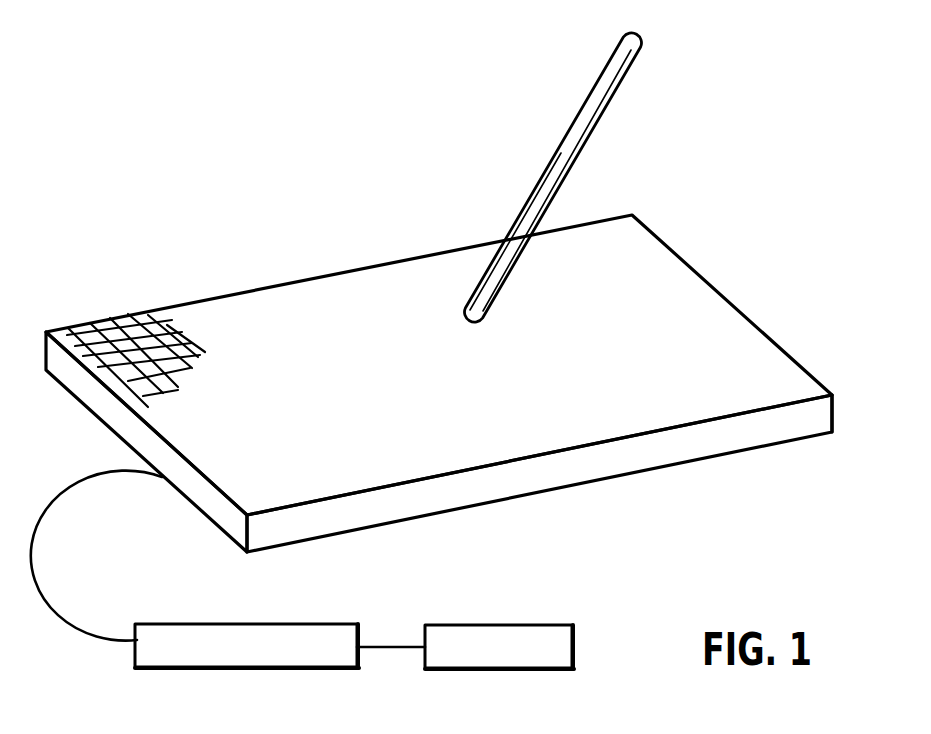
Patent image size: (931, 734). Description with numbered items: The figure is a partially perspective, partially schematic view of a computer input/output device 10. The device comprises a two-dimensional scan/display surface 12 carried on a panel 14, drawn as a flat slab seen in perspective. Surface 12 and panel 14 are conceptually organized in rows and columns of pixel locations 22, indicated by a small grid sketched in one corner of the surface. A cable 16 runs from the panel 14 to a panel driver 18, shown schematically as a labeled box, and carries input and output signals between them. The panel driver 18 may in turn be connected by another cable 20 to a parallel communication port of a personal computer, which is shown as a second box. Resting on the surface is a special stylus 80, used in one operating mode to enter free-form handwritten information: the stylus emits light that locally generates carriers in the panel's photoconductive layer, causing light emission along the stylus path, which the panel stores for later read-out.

The computer input/output device 10 is at (746, 532).
The two-dimensional scan/display surface 12 is at (340, 294).
The panel 14 is at (833, 413).
The cable 16 is at (65, 533).
The panel driver 18 is at (248, 622).
The cable 20 is at (388, 646).
The pixel locations 22 is at (112, 343).
The stylus 80 is at (615, 82).